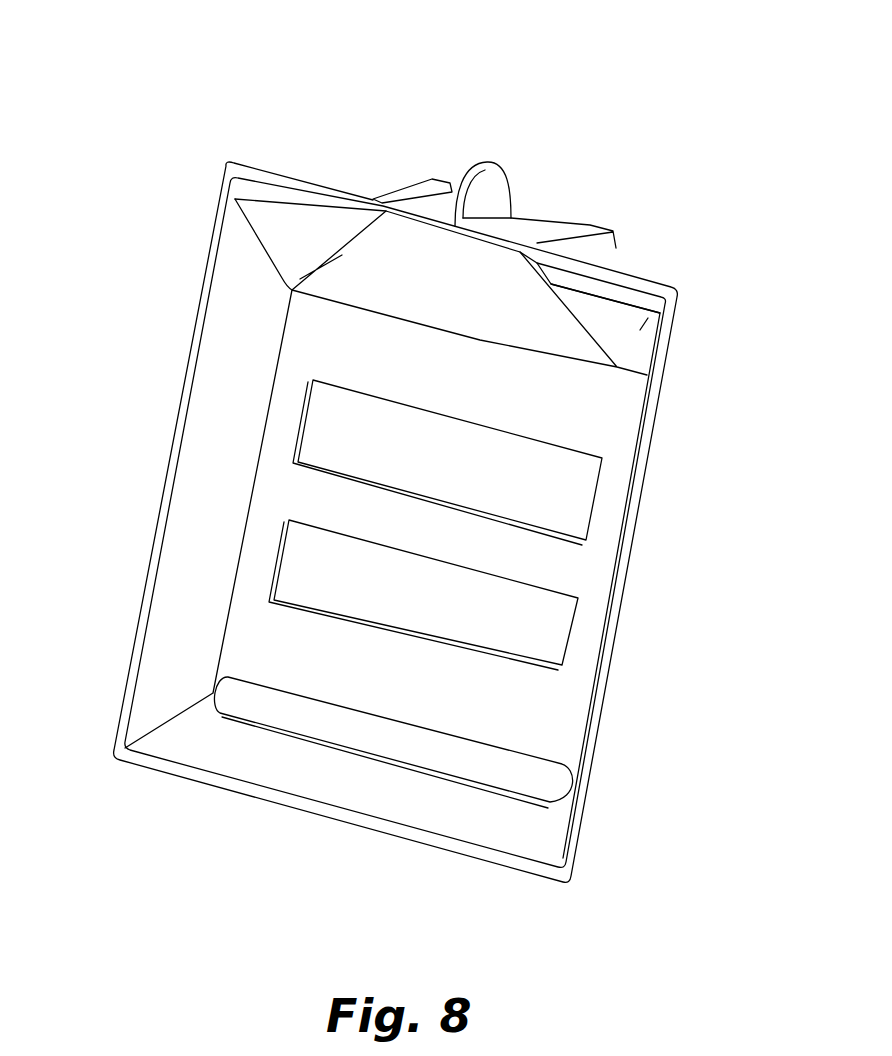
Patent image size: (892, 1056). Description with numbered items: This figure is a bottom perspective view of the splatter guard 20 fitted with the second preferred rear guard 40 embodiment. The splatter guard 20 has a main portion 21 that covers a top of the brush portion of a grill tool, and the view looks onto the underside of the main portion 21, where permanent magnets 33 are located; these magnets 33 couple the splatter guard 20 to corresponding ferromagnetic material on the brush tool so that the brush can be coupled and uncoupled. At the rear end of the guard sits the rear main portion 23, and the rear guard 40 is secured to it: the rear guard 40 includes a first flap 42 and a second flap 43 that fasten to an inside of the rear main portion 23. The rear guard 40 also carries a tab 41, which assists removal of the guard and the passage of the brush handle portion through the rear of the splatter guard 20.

The splatter guard 20 is at (118, 90).
The main portion 21 is at (417, 700).
The rear main portion 23 is at (607, 288).
The permanent magnets 33 is at (590, 495).
The rear guard 40 is at (538, 221).
The tab 41 is at (480, 184).
The first flap 42 is at (272, 228).
The second flap 43 is at (648, 316).